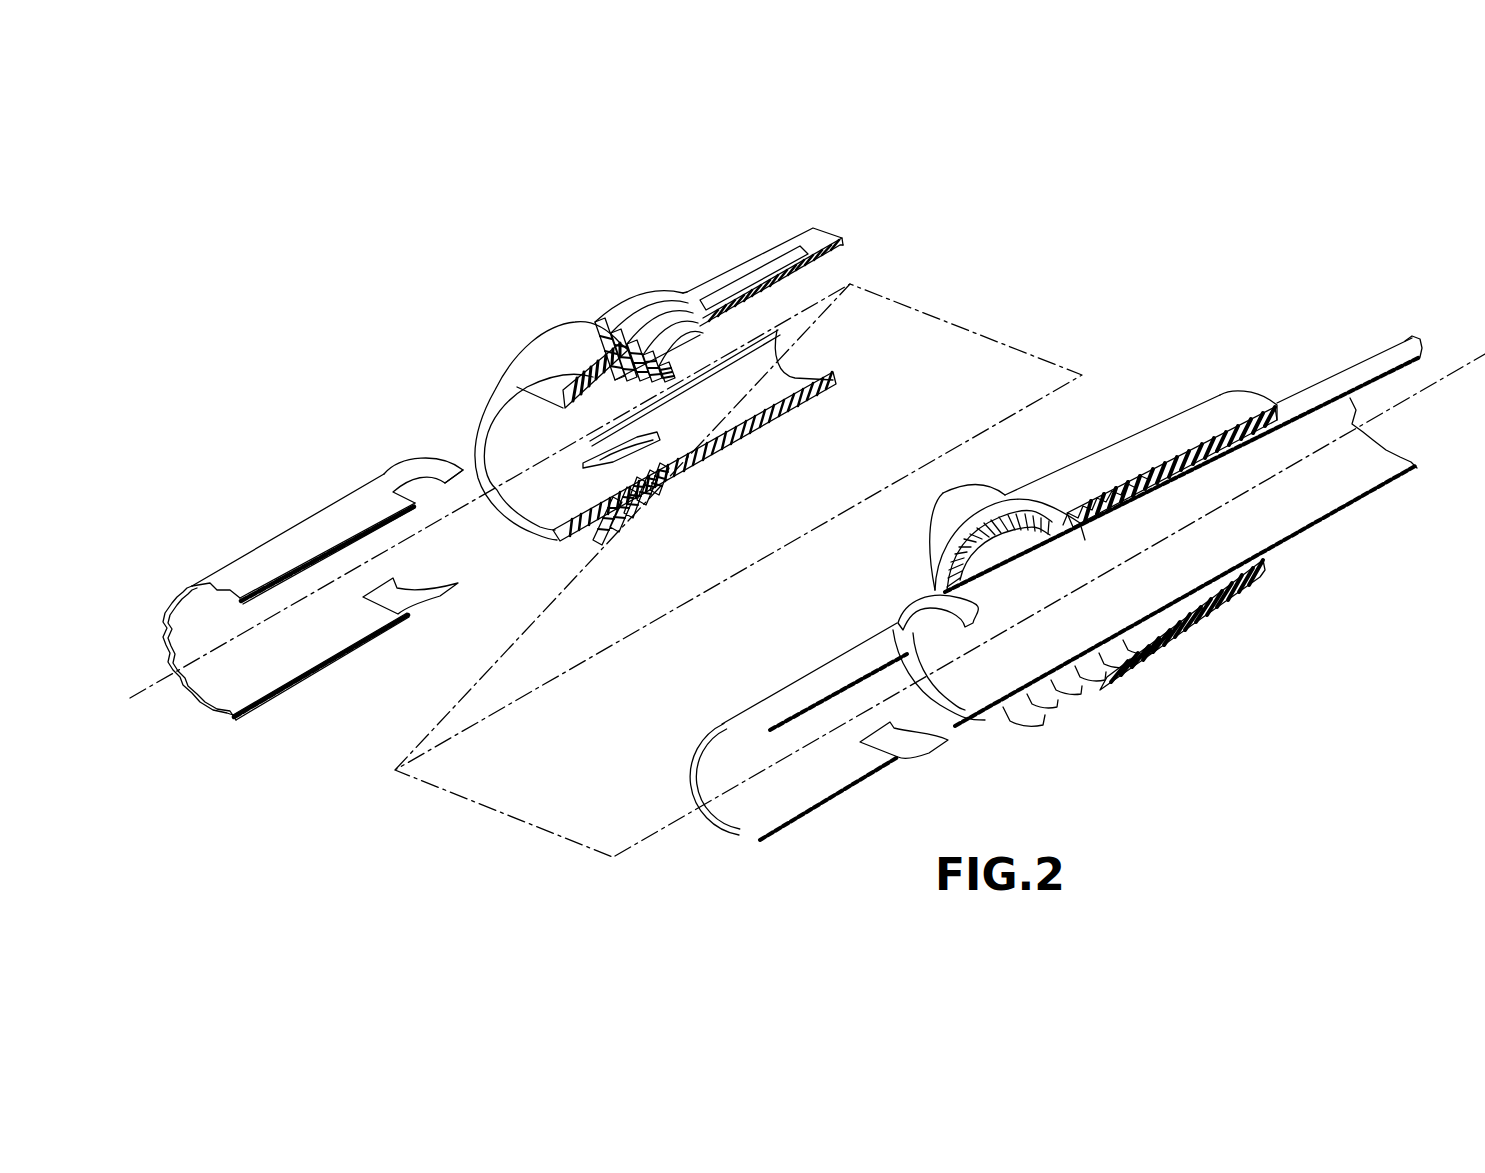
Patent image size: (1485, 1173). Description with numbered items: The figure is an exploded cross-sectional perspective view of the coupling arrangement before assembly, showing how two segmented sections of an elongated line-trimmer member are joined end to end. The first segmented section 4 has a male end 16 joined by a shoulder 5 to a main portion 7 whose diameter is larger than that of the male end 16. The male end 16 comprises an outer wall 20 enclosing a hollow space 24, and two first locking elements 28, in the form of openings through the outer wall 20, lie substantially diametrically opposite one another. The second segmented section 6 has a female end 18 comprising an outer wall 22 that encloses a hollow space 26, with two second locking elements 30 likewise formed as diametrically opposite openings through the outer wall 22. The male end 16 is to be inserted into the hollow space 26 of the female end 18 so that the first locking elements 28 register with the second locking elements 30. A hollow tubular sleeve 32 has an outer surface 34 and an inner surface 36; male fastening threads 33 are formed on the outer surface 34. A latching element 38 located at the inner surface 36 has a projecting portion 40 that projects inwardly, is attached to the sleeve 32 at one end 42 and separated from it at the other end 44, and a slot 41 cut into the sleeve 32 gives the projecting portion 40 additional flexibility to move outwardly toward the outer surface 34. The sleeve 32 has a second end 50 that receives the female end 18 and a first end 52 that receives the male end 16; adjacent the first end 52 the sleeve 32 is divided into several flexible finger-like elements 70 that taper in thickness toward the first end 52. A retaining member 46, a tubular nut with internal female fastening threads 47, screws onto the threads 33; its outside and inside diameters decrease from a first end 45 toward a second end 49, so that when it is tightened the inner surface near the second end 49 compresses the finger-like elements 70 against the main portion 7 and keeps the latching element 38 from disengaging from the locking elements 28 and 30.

The first segmented section 4 is at (1183, 492).
The shoulder 5 is at (957, 568).
The second segmented section 6 is at (303, 583).
The main portion 7 is at (1012, 563).
The male end 16 is at (827, 731).
The female end 18 is at (343, 488).
The outer wall 20 is at (797, 813).
The outer wall 22 is at (283, 683).
The hollow space 24 is at (818, 762).
The hollow space 26 is at (233, 670).
The first locking element 28 is at (917, 638).
The second locking element 30 is at (417, 487).
The sleeve 32 is at (712, 391).
The fastening threads 33 is at (641, 297).
The outer surface 34 is at (782, 410).
The inner surface 36 is at (776, 363).
The latching element 38 is at (684, 349).
The projecting portion 40 is at (618, 470).
The slot 41 is at (640, 443).
The end 42 is at (700, 455).
The end 44 is at (636, 515).
The first end 45 is at (973, 516).
The retaining member 46 is at (1141, 516).
The fastening threads 47 is at (1122, 505).
The second end 49 is at (1240, 394).
The second end 50 is at (523, 538).
The first end 52 is at (855, 232).
The finger-like elements 70 is at (760, 233).